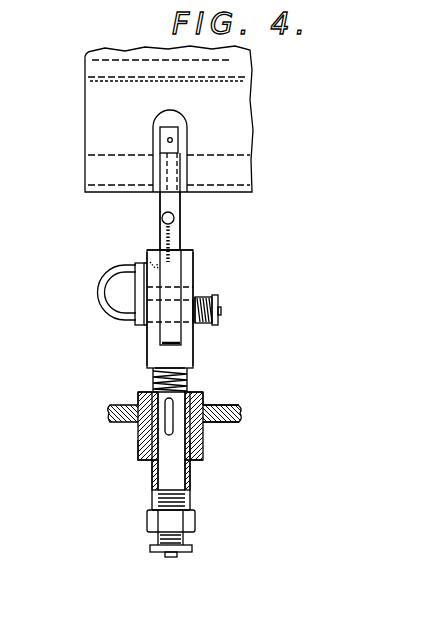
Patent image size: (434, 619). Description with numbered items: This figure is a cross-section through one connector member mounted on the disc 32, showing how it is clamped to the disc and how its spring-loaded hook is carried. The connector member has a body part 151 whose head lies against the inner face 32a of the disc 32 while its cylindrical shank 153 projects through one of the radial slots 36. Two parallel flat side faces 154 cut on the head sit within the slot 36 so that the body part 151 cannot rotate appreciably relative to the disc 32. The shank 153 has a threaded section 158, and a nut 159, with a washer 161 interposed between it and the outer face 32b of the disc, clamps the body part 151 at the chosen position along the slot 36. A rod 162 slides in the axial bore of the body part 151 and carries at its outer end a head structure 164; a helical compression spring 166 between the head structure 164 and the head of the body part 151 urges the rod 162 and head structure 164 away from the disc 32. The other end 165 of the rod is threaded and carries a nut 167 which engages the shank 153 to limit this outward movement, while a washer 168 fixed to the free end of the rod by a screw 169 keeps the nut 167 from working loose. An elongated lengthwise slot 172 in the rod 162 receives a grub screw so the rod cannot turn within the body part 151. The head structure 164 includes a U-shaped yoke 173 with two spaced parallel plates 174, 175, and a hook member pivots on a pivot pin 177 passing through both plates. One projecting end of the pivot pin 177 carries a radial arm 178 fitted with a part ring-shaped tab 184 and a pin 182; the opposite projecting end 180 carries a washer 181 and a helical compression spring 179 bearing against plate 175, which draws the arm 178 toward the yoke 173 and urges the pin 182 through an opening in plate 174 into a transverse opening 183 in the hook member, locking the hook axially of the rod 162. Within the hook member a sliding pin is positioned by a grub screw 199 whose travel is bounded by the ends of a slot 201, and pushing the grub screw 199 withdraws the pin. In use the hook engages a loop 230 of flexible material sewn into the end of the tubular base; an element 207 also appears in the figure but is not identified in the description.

The support block 207 is at (232, 108).
The loops 230 is at (183, 197).
The slot 201 is at (178, 224).
The grub screw 199 is at (160, 213).
The plate 174 is at (148, 250).
The pin 182 is at (145, 254).
The opening 183 is at (187, 258).
The plate 175 is at (193, 263).
The U-shaped yoke 173 is at (195, 272).
The radial arm 178 is at (127, 292).
The projecting end 180 is at (203, 298).
The part ring-shaped tab 184 is at (108, 315).
The washer 181 is at (219, 313).
The pivot pin 177 is at (200, 327).
The helical compression spring 179 is at (208, 330).
The head structure 164 is at (146, 343).
The helical compression spring 166 is at (153, 369).
The body part 151 is at (195, 385).
The flat side faces 154 is at (137, 398).
The radial slot 36 is at (223, 403).
The inner face 32a is at (110, 407).
The outer face 32b is at (232, 423).
The disc 32 is at (228, 427).
The washer 161 is at (140, 445).
The nut 159 is at (140, 457).
The threaded section 158 is at (192, 452).
The slot 172 is at (147, 483).
The rod 162 is at (190, 505).
The cylindrical shank 153 is at (152, 486).
The nut 167 is at (195, 520).
The threaded end 165 is at (158, 538).
The screw 169 is at (172, 557).
The washer 168 is at (190, 553).